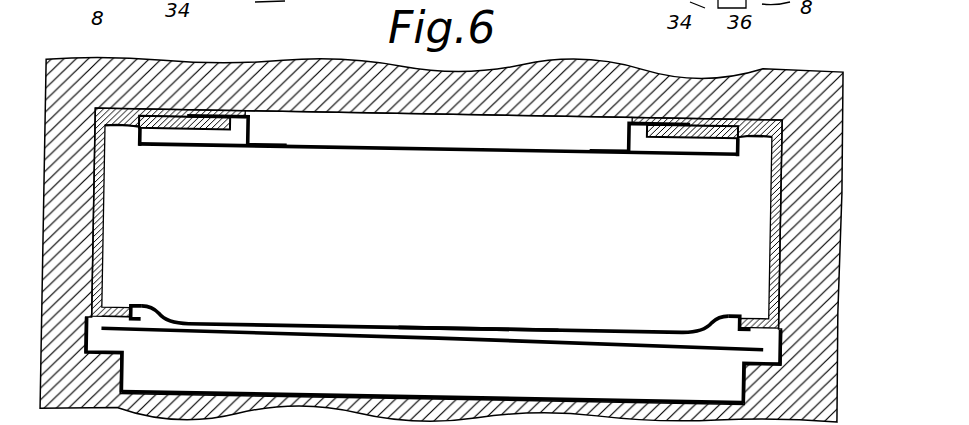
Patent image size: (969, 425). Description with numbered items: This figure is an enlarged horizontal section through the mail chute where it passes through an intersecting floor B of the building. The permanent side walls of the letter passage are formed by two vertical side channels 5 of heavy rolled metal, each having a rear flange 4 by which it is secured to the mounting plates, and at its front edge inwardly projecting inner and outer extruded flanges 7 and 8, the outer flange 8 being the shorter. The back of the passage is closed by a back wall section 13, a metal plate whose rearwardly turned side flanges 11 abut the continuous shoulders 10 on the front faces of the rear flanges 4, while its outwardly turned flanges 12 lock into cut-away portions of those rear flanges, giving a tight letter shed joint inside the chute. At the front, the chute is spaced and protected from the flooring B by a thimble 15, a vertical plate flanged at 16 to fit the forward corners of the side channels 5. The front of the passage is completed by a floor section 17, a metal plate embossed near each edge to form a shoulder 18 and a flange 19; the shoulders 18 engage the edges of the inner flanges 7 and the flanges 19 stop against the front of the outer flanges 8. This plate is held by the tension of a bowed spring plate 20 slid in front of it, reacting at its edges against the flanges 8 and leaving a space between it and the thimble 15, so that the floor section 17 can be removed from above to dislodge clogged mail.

The floor B is at (769, 72).
The rear flange 4 is at (176, 122).
The vertical side channel 5 is at (104, 238).
The inner extruded flange 7 is at (140, 303).
The outer extruded flange 8 is at (126, 351).
The rib or shoulder 10 is at (108, 128).
The rearwardly turned flange 11 is at (140, 134).
The outwardly turned flange 12 is at (248, 130).
The back wall section 13 is at (432, 146).
The thimble 15 is at (524, 388).
The thimble flange 16 is at (88, 356).
The floor section 17 is at (474, 320).
The shoulder 18 is at (150, 300).
The flange 19 is at (162, 306).
The bowed spring plate 20 is at (592, 336).